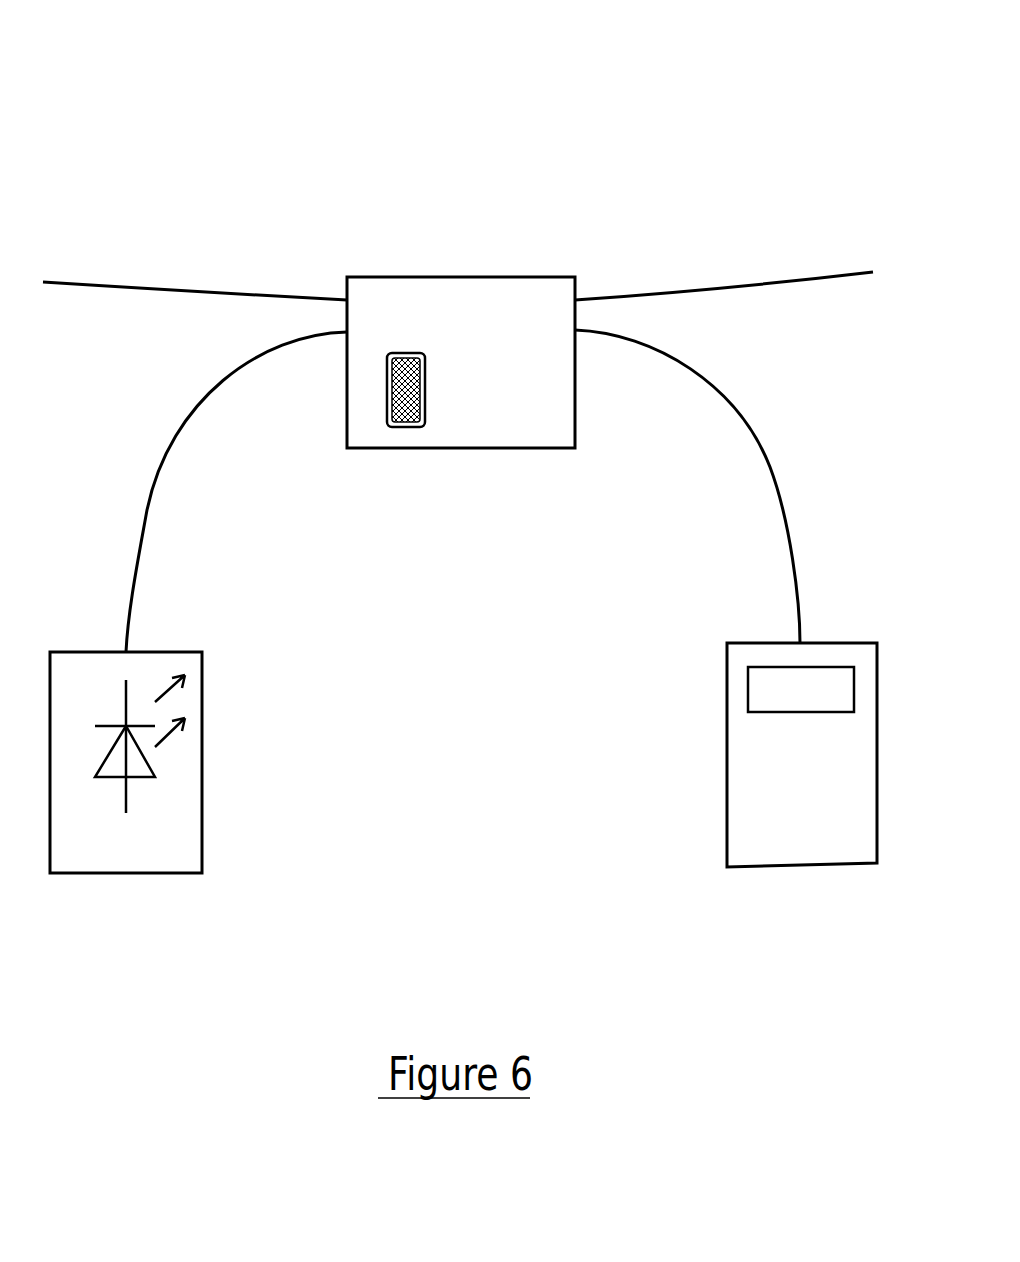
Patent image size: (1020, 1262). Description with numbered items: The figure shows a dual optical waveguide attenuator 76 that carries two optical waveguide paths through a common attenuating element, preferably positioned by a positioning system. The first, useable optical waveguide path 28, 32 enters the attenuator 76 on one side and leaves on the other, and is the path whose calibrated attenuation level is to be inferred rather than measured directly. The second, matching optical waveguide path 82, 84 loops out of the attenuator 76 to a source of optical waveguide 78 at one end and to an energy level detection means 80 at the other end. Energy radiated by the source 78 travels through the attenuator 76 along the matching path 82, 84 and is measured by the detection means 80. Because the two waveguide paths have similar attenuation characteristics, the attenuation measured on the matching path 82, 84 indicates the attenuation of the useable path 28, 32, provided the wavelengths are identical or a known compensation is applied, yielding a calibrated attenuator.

The optical waveguide path 28 is at (203, 293).
The optical waveguide path 32 is at (700, 290).
The dual optical waveguide attenuator 76 is at (452, 223).
The source of optical waveguide 78 is at (202, 723).
The energy level detection means 80 is at (727, 688).
The matching optical waveguide path 82 is at (147, 510).
The matching optical waveguide path 84 is at (778, 502).